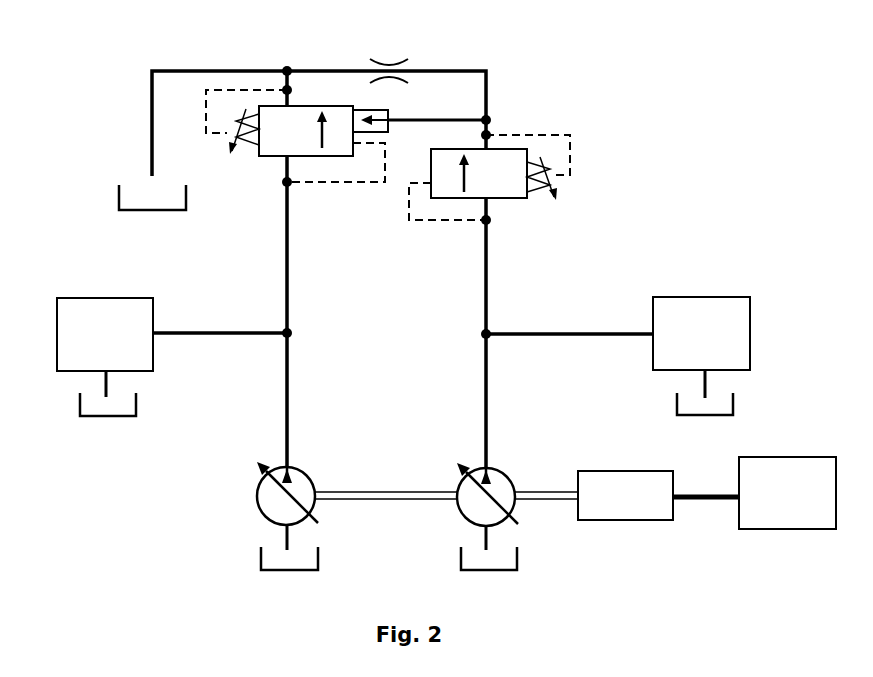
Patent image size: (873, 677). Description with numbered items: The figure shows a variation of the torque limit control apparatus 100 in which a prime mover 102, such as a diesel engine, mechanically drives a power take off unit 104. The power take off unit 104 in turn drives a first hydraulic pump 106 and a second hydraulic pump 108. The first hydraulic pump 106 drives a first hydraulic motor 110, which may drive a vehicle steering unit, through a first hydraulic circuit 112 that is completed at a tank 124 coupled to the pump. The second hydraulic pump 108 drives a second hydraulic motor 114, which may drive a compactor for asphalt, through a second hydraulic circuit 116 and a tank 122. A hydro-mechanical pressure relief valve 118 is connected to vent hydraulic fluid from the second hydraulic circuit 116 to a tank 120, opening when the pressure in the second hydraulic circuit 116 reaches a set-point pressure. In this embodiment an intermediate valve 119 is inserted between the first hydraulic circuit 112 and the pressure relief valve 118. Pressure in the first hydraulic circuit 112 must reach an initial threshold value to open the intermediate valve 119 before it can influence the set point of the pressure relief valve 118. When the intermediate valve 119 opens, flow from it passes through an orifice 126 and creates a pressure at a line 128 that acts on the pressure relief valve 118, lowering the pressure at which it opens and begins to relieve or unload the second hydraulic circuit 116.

The torque limit control apparatus 100 is at (338, 38).
The prime mover 102 is at (795, 531).
The power take off unit 104 is at (645, 522).
The first hydraulic pump 106 is at (465, 523).
The second hydraulic pump 108 is at (260, 515).
The first hydraulic motor 110 is at (668, 371).
The first hydraulic circuit 112 is at (608, 337).
The second hydraulic motor 114 is at (70, 373).
The second hydraulic circuit 116 is at (256, 337).
The pressure relief valve 118 is at (283, 158).
The intermediate valve 119 is at (497, 199).
The tank 120 is at (127, 212).
The tank 122 is at (90, 418).
The tank 124 is at (725, 416).
The orifice 126 is at (396, 58).
The line 128 is at (492, 119).